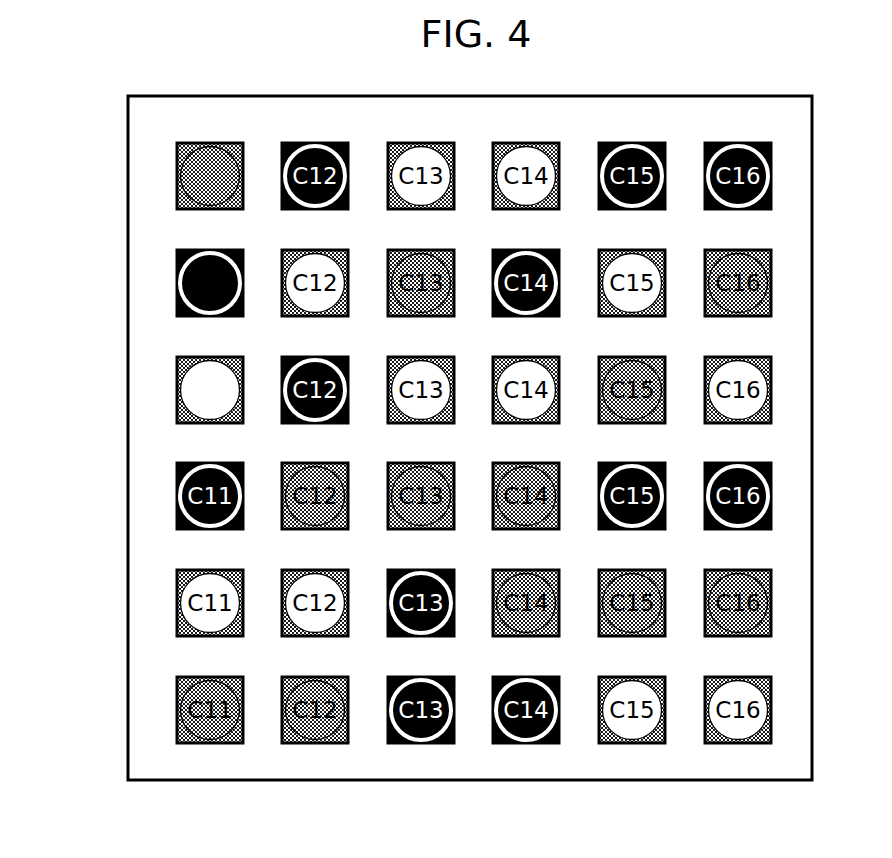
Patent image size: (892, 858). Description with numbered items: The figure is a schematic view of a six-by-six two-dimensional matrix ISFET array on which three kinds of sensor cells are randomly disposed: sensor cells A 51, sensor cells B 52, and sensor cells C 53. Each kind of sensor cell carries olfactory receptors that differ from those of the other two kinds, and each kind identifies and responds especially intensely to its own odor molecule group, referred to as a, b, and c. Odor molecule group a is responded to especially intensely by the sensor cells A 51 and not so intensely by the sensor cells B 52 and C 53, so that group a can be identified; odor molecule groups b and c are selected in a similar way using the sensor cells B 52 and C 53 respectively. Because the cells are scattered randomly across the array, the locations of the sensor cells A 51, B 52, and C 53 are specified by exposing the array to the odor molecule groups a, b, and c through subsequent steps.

The sensor cell A 51 is at (184, 168).
The sensor cell B 52 is at (184, 274).
The sensor cell C 53 is at (184, 382).